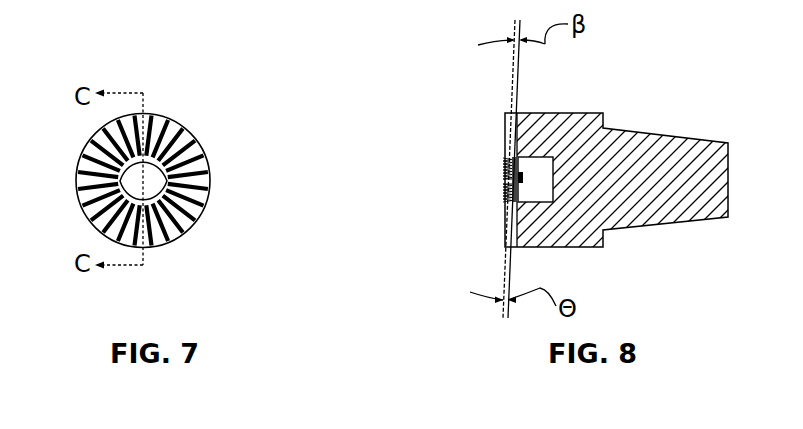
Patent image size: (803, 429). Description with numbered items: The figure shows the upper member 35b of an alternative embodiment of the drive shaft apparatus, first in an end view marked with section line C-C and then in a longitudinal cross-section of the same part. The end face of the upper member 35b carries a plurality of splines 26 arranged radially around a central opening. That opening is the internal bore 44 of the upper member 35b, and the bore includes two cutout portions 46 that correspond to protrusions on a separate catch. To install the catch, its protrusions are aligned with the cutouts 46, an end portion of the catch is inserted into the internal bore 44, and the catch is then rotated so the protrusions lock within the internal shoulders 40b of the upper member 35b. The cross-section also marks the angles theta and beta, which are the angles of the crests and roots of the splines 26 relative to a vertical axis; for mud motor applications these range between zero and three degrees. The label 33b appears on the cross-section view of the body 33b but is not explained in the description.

In FIG. 7, the upper member 35b is at (176, 149).
In FIG. 7, the splines 26 is at (183, 140).
In FIG. 7, the cutout portions 46 is at (182, 183).
In FIG. 8, the nozzle body (cross section) 33b is at (591, 159).
In FIG. 8, the internal bore 44 is at (538, 157).
In FIG. 8, the internal shoulders 40b is at (509, 203).